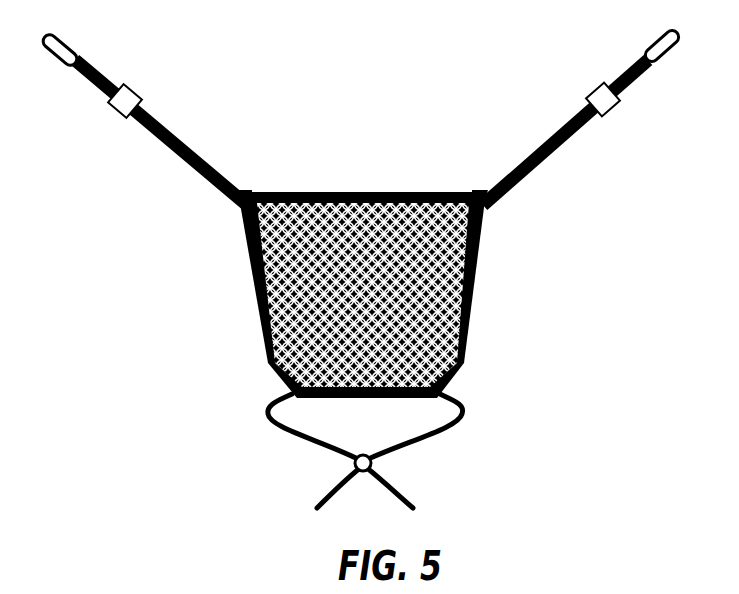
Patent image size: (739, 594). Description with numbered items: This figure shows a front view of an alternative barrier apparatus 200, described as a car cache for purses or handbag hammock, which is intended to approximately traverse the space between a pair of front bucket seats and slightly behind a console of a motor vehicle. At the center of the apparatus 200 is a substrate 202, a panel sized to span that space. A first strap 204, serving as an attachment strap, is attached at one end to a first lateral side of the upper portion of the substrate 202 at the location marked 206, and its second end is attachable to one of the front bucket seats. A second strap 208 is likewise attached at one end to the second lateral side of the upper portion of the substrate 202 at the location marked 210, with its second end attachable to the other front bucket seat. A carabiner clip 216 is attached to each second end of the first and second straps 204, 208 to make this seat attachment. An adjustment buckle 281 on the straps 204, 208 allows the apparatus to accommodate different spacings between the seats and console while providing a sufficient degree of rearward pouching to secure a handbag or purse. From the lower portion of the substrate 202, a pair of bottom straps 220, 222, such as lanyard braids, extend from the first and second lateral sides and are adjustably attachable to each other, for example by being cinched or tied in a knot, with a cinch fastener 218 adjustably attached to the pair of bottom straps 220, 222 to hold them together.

The barrier apparatus 200 is at (336, 143).
The substrate 202 is at (339, 188).
The first strap 204 is at (150, 133).
The attachment of first strap to substrate 206 is at (240, 208).
The second strap 208 is at (585, 127).
The attachment of second strap to substrate 210 is at (484, 206).
The carabiner clip 216 is at (52, 63).
The cinch fastener 218 is at (352, 466).
The left drawstring cord 220 is at (270, 422).
The right drawstring cord 222 is at (462, 421).
The adjustment buckle 281 is at (135, 92).